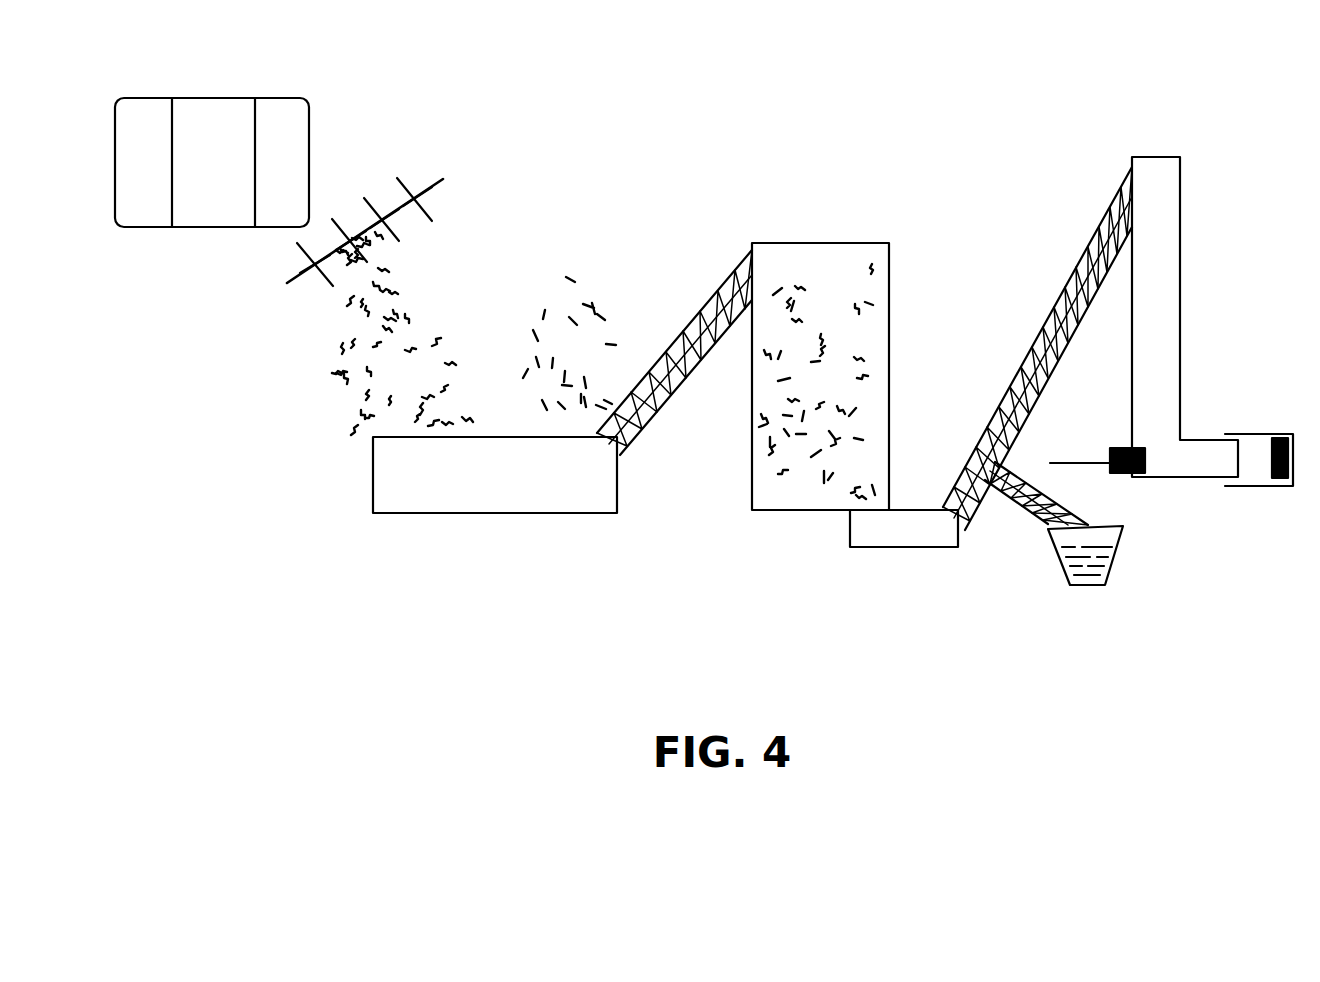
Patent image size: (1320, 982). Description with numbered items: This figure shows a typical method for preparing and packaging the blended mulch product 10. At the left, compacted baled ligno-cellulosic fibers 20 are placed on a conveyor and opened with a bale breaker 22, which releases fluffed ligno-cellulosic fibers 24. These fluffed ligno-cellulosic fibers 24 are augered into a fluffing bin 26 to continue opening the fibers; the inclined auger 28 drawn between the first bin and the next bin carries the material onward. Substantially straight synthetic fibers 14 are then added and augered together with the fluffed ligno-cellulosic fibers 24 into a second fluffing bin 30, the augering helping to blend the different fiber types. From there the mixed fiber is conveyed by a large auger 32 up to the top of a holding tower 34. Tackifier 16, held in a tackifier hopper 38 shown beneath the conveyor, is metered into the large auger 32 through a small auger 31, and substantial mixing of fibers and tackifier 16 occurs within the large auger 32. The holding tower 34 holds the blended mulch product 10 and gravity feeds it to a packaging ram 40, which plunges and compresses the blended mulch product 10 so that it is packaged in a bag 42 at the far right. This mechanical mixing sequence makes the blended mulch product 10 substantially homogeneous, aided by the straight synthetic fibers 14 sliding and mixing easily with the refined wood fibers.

The blended mulch product 10 is at (1268, 462).
The substantially straight synthetic fibers 14 is at (593, 250).
The tackifier 16 is at (1090, 577).
The compacted baled ligno-cellulosic fibers 20 is at (215, 98).
The bale breaker 22 is at (420, 180).
The fluffed ligno-cellulosic fibers 24 is at (362, 372).
The fluffing bin 26 is at (487, 513).
The first conveyor 28 is at (674, 352).
The fluffing bin 30 is at (813, 243).
The small auger 31 is at (1002, 500).
The large auger 32 is at (1012, 372).
The holding tower 34 is at (1162, 157).
The tackifier hopper 38 is at (1117, 552).
The packaging ram 40 is at (1088, 463).
The bag 42 is at (1262, 434).